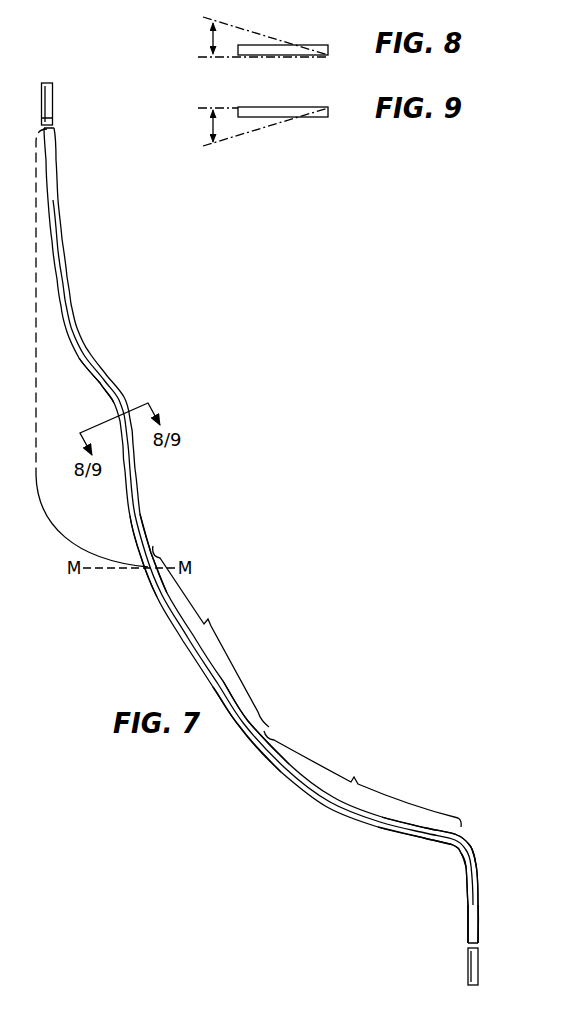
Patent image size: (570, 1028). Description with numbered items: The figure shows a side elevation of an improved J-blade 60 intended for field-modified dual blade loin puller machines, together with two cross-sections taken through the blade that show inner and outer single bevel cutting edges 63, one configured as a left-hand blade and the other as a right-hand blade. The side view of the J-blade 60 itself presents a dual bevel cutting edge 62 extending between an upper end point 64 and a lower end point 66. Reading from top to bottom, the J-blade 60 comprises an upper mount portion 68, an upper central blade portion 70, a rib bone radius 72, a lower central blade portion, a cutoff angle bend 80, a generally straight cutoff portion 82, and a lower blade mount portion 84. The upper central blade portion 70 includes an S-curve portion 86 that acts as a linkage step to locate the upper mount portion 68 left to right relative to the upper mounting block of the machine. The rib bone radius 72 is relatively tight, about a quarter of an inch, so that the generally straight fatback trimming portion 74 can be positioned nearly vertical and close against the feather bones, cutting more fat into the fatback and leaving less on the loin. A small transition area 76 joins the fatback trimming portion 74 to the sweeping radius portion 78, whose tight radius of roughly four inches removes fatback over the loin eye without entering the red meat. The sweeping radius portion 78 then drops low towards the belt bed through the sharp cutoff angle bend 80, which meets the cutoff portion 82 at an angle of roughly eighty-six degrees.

In FIG. 7, the J-blade 60 is at (166, 311).
In FIG. 7, the dual bevel cutting edge 62 is at (78, 355).
In FIG. 8, the single bevel cutting edge 63 is at (318, 45).
In FIG. 9, the single bevel cutting edge 63 is at (318, 117).
In FIG. 7, the upper end point 64 is at (62, 220).
In FIG. 7, the lower end point 66 is at (477, 903).
In FIG. 7, the upper mount portion 68 is at (57, 84).
In FIG. 7, the upper central blade portion 70 is at (35, 322).
In FIG. 7, the rib bone radius 72 is at (154, 549).
In FIG. 7, the straight fatback trimming portion 74 is at (211, 636).
In FIG. 7, the transition area 76 is at (237, 726).
In FIG. 7, the sweeping radius portion 78 is at (362, 779).
In FIG. 7, the cutoff angle bend 80 is at (476, 832).
In FIG. 7, the cutoff portion 82 is at (486, 845).
In FIG. 7, the lower blade mount portion 84 is at (486, 948).
In FIG. 7, the S-curve portion 86 is at (119, 392).